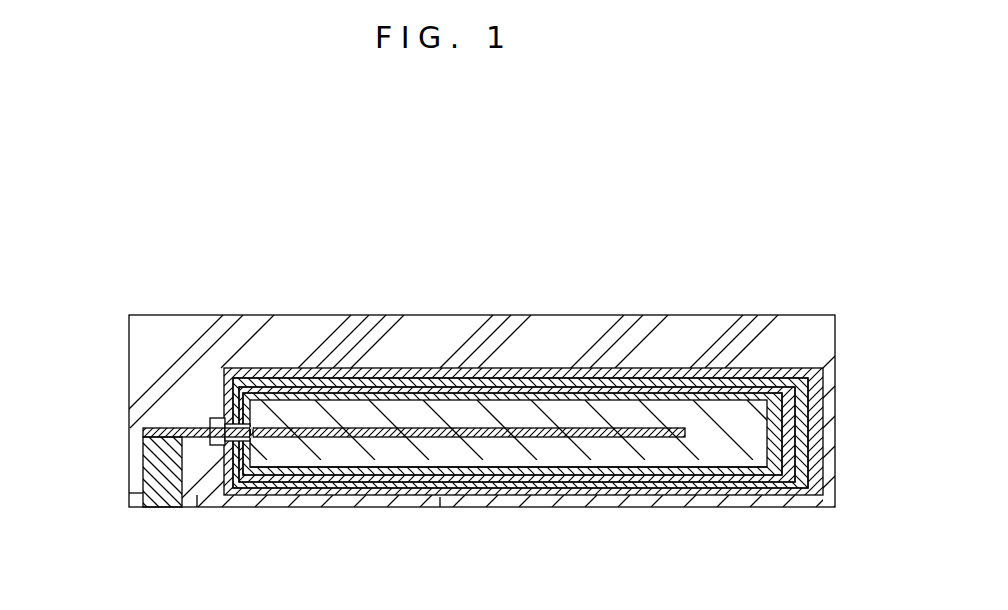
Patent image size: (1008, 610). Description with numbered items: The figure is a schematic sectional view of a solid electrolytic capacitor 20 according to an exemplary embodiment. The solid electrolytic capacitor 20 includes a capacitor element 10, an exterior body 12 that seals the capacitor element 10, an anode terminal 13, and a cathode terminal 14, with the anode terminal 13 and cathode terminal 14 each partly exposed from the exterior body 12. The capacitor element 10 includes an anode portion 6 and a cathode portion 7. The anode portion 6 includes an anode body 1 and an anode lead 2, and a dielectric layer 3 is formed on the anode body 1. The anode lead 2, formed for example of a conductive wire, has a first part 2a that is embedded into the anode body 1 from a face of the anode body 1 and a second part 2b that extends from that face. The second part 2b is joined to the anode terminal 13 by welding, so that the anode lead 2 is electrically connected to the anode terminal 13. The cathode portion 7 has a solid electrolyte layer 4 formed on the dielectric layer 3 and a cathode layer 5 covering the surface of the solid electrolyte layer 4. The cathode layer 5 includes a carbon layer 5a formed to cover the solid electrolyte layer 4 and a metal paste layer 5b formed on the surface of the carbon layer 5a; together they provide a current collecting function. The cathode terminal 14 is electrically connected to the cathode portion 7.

The anode body 1 is at (510, 415).
The anode lead 2 is at (375, 403).
The first part 2a is at (580, 437).
The second part 2b is at (167, 427).
The dielectric layer 3 is at (387, 397).
The solid electrolyte layer 4 is at (342, 390).
The cathode layer 5 is at (523, 365).
The carbon layer 5a is at (285, 383).
The metal paste layer 5b is at (250, 372).
The anode portion 6 is at (426, 380).
The cathode portion 7 is at (523, 339).
The capacitor element 10 is at (434, 350).
The exterior body 12 is at (152, 340).
The anode terminal 13 is at (160, 488).
The cathode terminal 14 is at (732, 498).
The solid electrolytic capacitor 20 is at (787, 247).